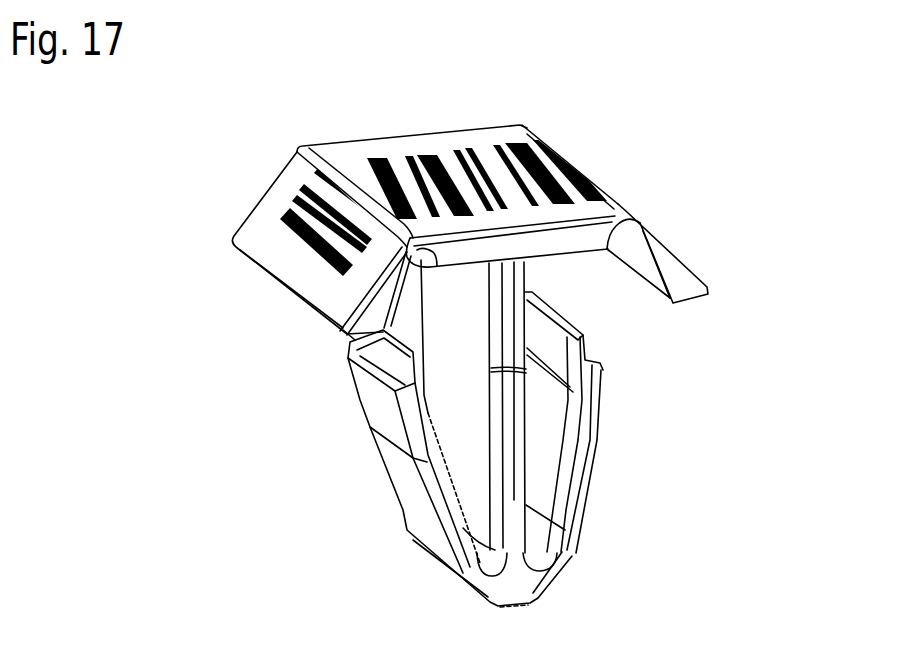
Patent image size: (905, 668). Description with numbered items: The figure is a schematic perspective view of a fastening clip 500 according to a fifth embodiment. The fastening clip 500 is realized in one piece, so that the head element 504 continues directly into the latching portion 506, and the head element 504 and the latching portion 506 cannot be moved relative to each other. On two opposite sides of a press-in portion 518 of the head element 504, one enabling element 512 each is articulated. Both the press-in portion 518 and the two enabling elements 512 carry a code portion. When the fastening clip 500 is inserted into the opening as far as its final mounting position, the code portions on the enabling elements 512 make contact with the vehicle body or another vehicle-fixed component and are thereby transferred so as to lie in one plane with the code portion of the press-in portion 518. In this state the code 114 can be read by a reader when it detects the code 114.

The fastening clip 500 is at (206, 514).
The press-in portion 518 is at (435, 135).
The code 114 is at (325, 148).
The enabling element 512 is at (265, 218).
The head element 504 is at (558, 147).
The latching portion 506 is at (580, 485).